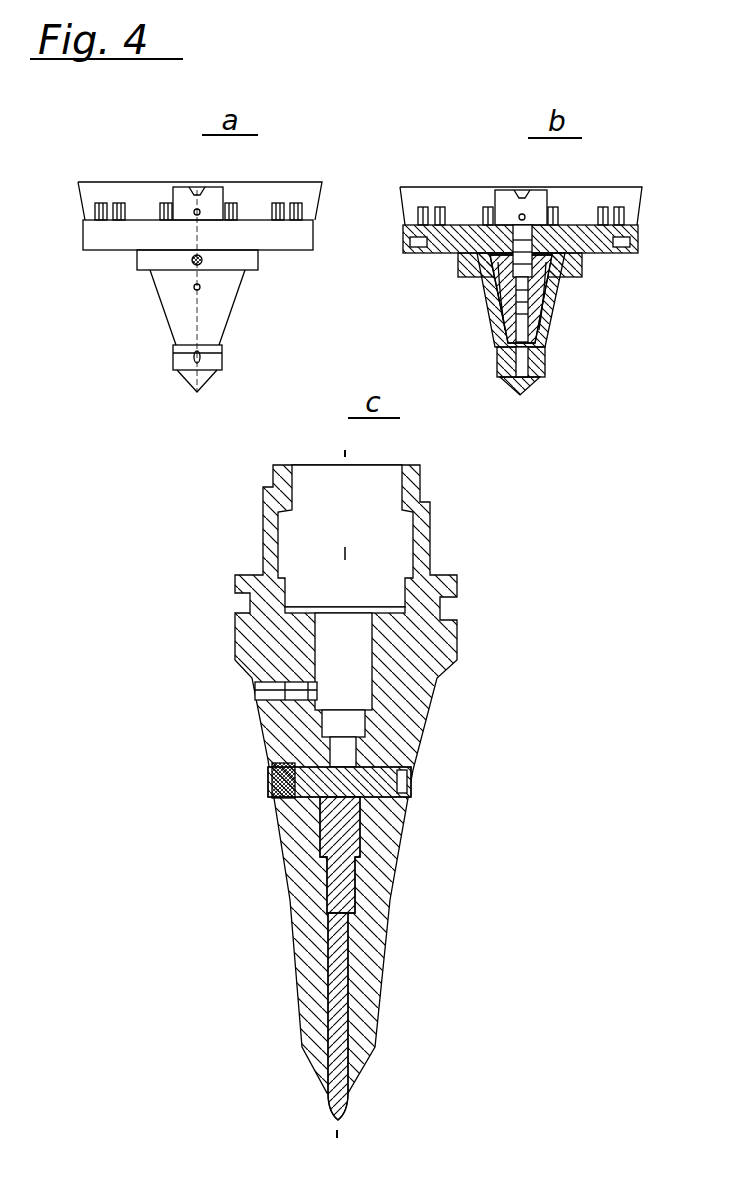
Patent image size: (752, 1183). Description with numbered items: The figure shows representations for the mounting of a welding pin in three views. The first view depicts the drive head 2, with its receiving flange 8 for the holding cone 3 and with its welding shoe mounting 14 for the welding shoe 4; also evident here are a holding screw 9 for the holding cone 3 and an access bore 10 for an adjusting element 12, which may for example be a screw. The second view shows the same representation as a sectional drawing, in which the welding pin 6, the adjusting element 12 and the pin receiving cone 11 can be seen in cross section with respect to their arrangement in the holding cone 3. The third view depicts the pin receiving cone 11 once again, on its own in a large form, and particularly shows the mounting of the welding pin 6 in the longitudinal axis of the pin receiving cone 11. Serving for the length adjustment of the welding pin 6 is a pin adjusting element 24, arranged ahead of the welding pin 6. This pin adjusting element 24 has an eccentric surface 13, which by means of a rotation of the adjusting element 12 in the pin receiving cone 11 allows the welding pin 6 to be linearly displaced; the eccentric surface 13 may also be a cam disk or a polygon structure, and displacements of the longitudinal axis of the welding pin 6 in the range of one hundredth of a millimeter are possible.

The drive head 2 is at (238, 181).
The holding cone 3 is at (168, 315).
The welding shoe 4 is at (188, 385).
The welding pin 6 is at (528, 383).
The receiving flange 8 is at (83, 243).
The holding screw 9 is at (202, 261).
The access bore 10 is at (201, 288).
The pin receiving cone 11 is at (535, 312).
The adjusting element 12 is at (523, 288).
The eccentric surface 13 is at (353, 795).
The welding shoe mounting 14 is at (220, 360).
The pin adjusting element 24 is at (340, 833).